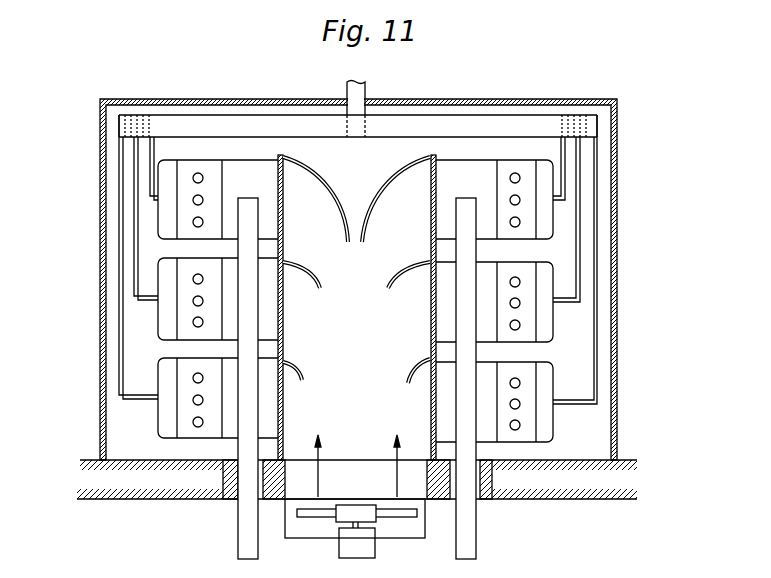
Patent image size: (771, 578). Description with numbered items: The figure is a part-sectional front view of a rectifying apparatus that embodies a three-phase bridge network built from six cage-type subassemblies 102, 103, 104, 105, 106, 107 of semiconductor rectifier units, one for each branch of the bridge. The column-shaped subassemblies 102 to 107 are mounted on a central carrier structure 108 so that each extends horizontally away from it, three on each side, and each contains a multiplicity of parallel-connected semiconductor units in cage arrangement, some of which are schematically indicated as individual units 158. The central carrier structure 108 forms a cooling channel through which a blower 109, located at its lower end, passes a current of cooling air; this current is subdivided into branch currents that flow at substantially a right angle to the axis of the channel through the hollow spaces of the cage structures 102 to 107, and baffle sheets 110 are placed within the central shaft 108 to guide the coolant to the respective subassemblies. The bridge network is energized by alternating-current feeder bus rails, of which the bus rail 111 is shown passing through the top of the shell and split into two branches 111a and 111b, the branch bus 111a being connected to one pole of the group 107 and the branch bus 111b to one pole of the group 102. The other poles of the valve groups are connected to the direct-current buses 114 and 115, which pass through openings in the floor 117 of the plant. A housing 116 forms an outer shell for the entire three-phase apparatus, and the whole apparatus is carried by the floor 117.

The cage-type subassembly of rectifier units 102 is at (548, 218).
The cage-type subassembly of rectifier units 103 is at (546, 277).
The cage-type subassembly of rectifier units 104 is at (548, 376).
The cage-type subassembly of rectifier units 105 is at (172, 407).
The cage-type subassembly of rectifier units 106 is at (172, 306).
The cage-type subassembly of rectifier units 107 is at (170, 212).
The central carrier structure 108 is at (358, 175).
The blower 109 is at (335, 525).
The baffle sheets 110 is at (337, 194).
The bus rail 111 is at (347, 86).
The branch bus 111a is at (190, 125).
The branch bus 111b is at (467, 125).
The direct-current bus 114 is at (244, 528).
The direct-current bus 115 is at (470, 528).
The housing 116 is at (618, 313).
The floor 117 is at (203, 480).
The individual semiconductor units 158 is at (197, 374).